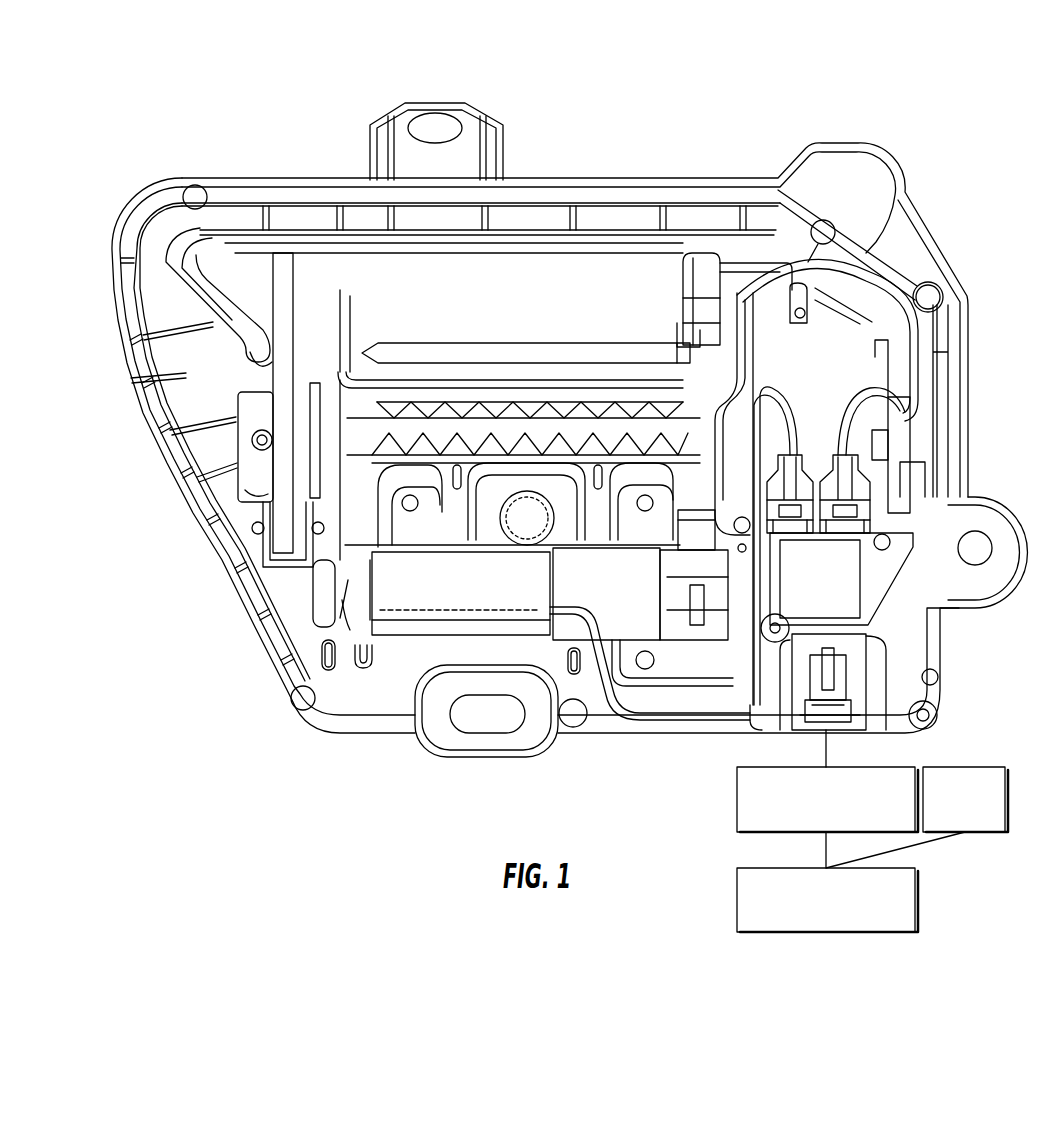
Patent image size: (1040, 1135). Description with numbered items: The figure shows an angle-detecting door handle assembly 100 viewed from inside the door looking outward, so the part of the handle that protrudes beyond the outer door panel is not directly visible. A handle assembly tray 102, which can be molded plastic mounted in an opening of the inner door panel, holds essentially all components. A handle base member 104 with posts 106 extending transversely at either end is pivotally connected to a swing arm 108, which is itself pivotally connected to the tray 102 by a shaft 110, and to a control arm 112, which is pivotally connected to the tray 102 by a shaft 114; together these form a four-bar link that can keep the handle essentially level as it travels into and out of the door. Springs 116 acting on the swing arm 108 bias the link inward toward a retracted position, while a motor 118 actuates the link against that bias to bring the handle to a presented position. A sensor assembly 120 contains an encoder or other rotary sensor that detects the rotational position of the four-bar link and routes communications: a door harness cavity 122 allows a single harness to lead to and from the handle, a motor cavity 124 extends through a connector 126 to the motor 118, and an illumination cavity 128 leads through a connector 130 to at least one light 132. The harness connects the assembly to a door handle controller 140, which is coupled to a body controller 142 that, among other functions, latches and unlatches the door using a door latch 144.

The angle-detecting door handle assembly 100 is at (198, 98).
The handle assembly tray 102 is at (256, 178).
The handle base member 104 is at (502, 313).
The posts 106 is at (358, 300).
The swing arm 108 is at (316, 585).
The shaft 110 is at (445, 638).
The control arm 112 is at (243, 378).
The shaft 114 is at (227, 523).
The springs 116 is at (442, 525).
The motor 118 is at (517, 604).
The sensor assembly 120 is at (900, 480).
The door harness cavity 122 is at (795, 723).
The motor cavity 124 is at (757, 386).
The connector 126 is at (730, 528).
The illumination cavity 128 is at (866, 352).
The connector 130 is at (877, 283).
The light 132 is at (693, 300).
The door handle controller 140 is at (735, 800).
The body controller 142 is at (735, 898).
The door latch 144 is at (975, 767).